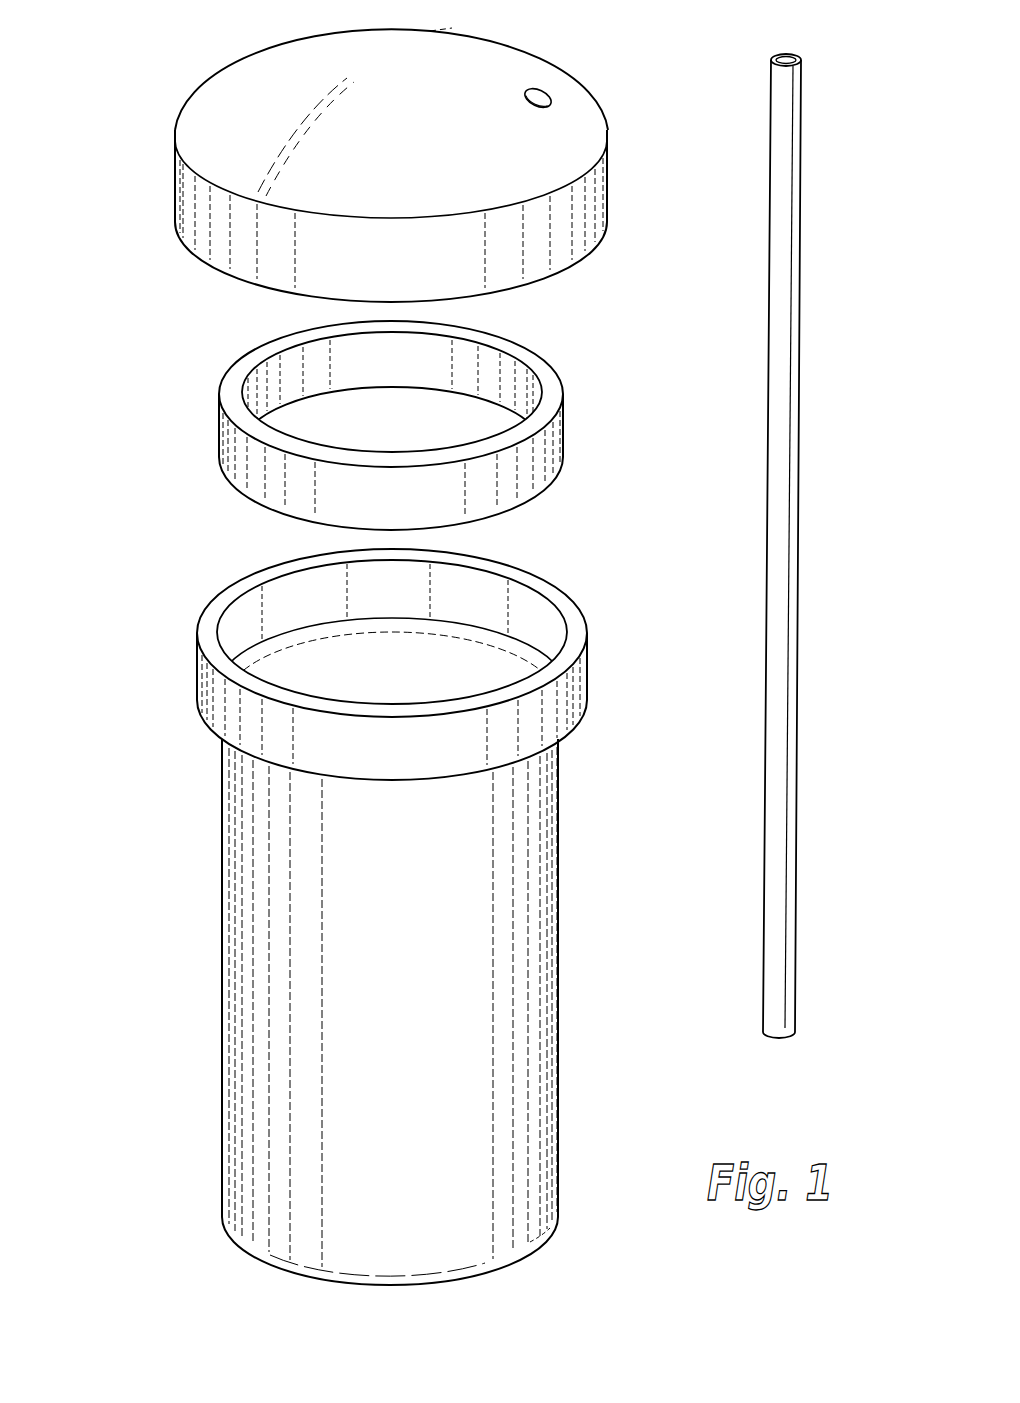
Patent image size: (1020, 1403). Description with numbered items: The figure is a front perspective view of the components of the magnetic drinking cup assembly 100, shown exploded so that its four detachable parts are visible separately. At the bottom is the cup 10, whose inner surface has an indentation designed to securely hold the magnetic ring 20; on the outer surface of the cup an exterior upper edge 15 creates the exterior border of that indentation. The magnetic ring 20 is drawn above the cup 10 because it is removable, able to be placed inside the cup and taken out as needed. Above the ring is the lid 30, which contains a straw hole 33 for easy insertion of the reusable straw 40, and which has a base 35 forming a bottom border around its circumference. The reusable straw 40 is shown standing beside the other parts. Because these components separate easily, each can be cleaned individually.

The magnetic drinking cup assembly 100 is at (120, 638).
The cup 10 is at (222, 995).
The exterior upper edge 15 is at (198, 688).
The magnetic ring 20 is at (218, 428).
The lid 30 is at (228, 60).
The straw hole 33 is at (551, 87).
The base 35 is at (173, 182).
The reusable straw 40 is at (800, 745).